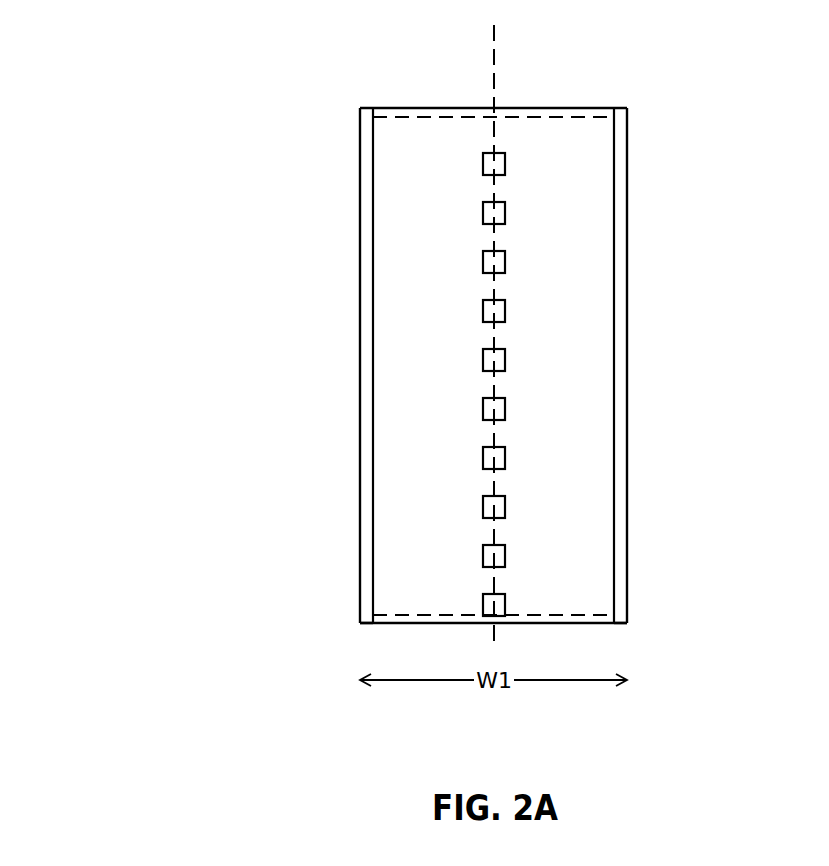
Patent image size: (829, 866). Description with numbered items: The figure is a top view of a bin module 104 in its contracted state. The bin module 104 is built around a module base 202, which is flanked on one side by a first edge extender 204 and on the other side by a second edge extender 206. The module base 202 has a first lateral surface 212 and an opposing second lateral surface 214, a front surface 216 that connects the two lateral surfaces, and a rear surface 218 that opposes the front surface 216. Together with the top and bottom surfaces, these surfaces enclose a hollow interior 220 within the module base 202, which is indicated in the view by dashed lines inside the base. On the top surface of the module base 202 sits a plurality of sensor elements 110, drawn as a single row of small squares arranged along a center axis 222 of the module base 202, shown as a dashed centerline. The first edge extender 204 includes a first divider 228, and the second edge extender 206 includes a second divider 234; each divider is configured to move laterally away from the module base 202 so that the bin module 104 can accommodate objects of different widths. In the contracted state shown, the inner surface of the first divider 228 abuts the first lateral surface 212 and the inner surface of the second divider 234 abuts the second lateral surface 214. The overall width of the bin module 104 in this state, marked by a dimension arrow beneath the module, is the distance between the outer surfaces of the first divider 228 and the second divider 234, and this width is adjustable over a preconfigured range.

The bin module 104 is at (163, 48).
The sensor elements 110 is at (496, 410).
The module base 202 is at (446, 299).
The first edge extender 204 is at (366, 623).
The second edge extender 206 is at (622, 623).
The first lateral surface 212 is at (373, 304).
The second lateral surface 214 is at (614, 364).
The front surface 216 is at (605, 623).
The rear surface 218 is at (604, 108).
The hollow interior 220 is at (424, 119).
The center axis 222 is at (494, 34).
The first divider 228 is at (360, 168).
The second divider 234 is at (627, 168).